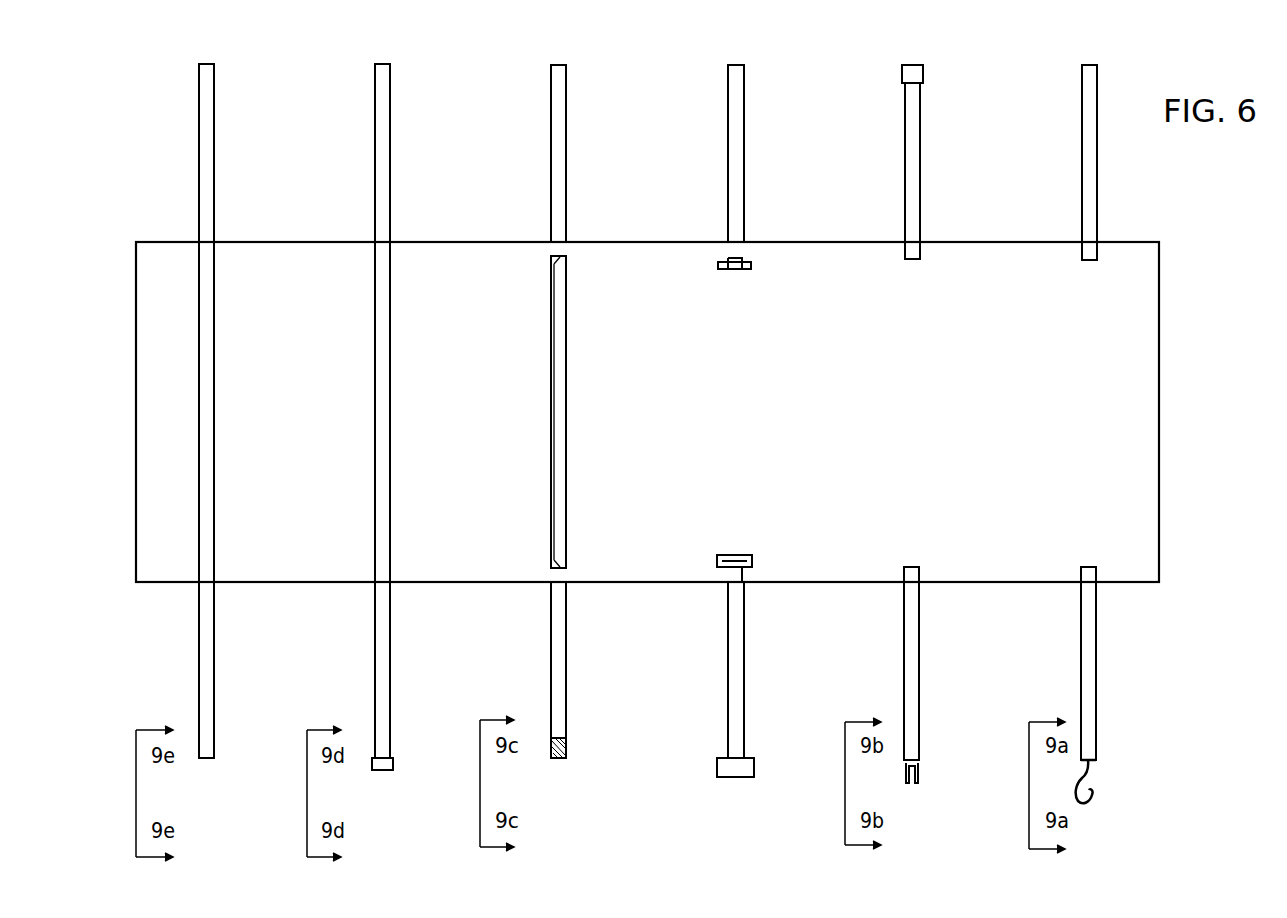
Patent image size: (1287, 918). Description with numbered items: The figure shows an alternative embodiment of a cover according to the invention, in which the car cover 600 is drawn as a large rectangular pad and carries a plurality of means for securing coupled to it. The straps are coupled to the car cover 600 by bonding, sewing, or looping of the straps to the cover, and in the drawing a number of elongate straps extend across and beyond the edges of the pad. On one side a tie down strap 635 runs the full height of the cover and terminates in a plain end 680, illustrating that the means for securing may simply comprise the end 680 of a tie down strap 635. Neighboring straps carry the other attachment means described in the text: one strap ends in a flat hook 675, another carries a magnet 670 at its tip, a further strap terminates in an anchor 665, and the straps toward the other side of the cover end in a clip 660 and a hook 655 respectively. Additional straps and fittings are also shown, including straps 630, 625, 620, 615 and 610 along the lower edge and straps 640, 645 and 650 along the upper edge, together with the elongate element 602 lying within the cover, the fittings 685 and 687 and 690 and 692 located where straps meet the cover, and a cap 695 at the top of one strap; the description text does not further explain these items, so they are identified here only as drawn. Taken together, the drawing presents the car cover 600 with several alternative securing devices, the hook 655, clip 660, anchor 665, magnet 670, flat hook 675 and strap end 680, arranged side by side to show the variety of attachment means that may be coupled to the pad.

The car cover 600 is at (995, 431).
The lip 602 is at (553, 258).
The tool 610 is at (1090, 623).
The tool 615 is at (912, 678).
The tool 620 is at (733, 689).
The tool 625 is at (560, 634).
The tool 630 is at (380, 634).
The tie down strap 635 is at (207, 658).
The tool 640 is at (735, 167).
The tool 645 is at (913, 155).
The tool 650 is at (1087, 158).
The hook 655 is at (1093, 791).
The clip 660 is at (919, 782).
The anchor 665 is at (723, 767).
The magnet 670 is at (557, 762).
The flat hook 675 is at (382, 771).
The end of tie down strap 680 is at (203, 762).
The clamp 685 is at (727, 554).
The shaft 687 is at (744, 570).
The clamp 690 is at (721, 270).
The fastener 692 is at (751, 264).
The cap 695 is at (912, 73).